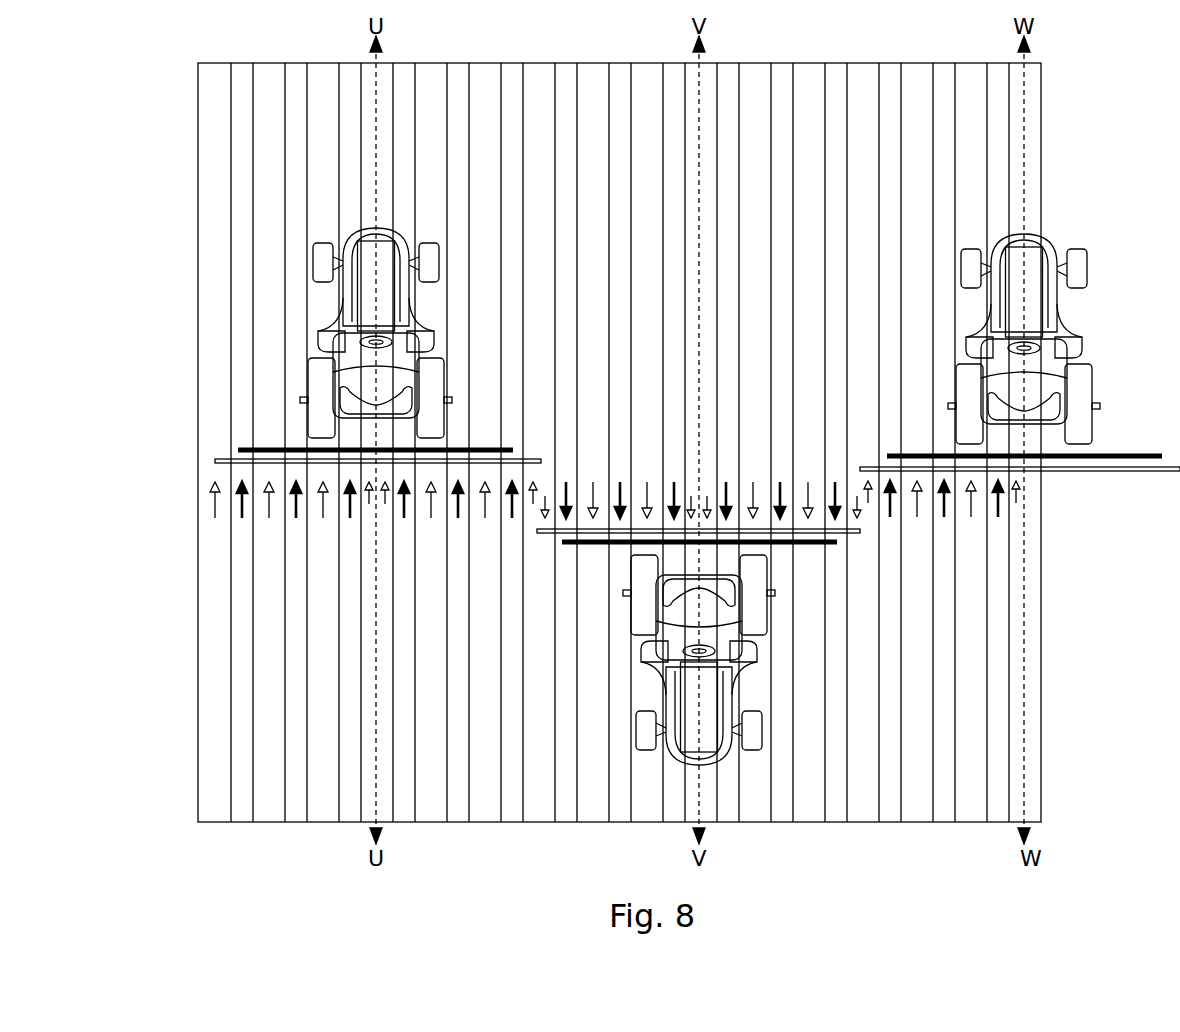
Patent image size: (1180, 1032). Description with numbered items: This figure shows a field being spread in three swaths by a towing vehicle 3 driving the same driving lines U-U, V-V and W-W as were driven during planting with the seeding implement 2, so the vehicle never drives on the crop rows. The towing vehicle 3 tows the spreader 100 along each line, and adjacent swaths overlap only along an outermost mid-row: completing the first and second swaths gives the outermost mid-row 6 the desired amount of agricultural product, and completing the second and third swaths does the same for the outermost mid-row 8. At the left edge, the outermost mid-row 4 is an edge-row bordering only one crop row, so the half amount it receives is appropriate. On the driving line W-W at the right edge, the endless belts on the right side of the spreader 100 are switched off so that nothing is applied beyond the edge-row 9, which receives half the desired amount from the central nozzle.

The seeding implement 2 is at (238, 448).
The towing vehicle 3 is at (318, 334).
The outermost mid-row 4 is at (215, 808).
The outermost mid-row 6 is at (538, 808).
The outermost mid-row 8 is at (863, 808).
The edge-row 9 is at (1016, 812).
The spreader 100 is at (215, 461).